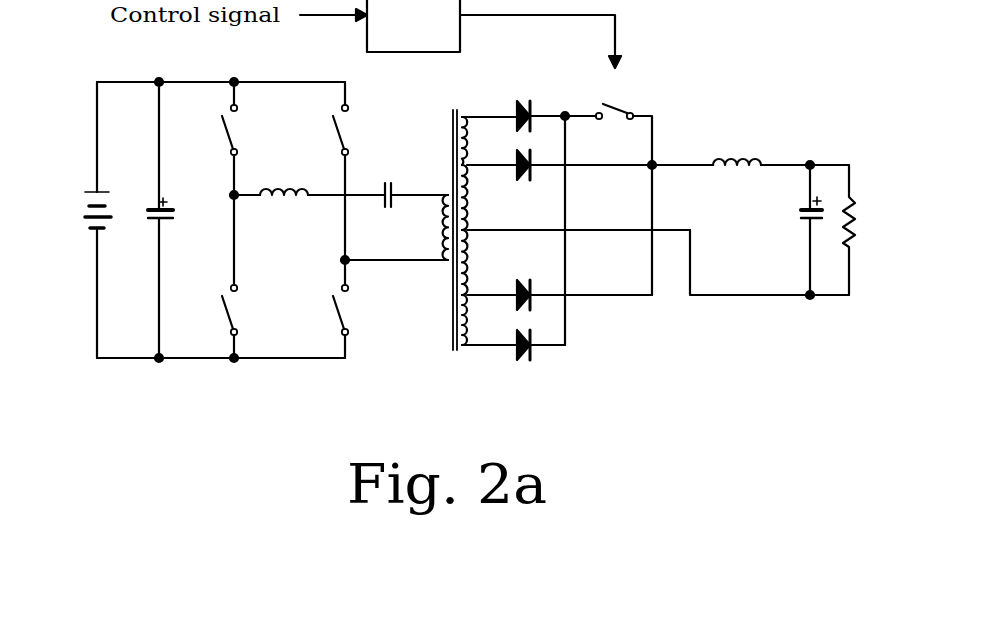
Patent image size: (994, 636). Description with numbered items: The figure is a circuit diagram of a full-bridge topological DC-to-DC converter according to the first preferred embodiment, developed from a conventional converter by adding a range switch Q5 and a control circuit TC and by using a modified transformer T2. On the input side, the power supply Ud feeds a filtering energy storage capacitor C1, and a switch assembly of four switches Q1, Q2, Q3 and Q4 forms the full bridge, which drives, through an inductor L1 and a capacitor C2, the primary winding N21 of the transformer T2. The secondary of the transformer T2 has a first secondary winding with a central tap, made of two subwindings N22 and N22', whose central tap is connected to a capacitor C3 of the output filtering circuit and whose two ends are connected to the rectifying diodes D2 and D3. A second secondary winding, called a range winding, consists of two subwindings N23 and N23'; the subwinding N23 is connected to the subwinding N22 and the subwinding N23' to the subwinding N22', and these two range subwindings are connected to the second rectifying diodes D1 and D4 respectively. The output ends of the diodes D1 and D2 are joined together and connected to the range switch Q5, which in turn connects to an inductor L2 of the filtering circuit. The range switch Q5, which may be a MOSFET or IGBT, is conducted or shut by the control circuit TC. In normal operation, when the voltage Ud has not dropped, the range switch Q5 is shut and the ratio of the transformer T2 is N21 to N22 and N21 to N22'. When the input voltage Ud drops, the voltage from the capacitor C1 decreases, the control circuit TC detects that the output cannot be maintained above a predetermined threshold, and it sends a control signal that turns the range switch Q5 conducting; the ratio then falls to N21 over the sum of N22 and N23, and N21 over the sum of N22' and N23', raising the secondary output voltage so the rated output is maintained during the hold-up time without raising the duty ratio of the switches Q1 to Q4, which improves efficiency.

The power supply input voltage Ud is at (111, 220).
The filtering energy storage capacitor C1 is at (173, 220).
The switch of switch assembly Q1 is at (217, 138).
The switch of switch assembly Q2 is at (217, 276).
The switch of switch assembly Q3 is at (328, 171).
The switch of switch assembly Q4 is at (328, 309).
The inductor L1 is at (289, 182).
The capacitor C2 is at (396, 183).
The transformer T2 is at (517, 221).
The primary winding N21 is at (396, 227).
The subwinding of first secondary winding N22 is at (576, 197).
The subwinding of first secondary winding N22' is at (489, 262).
The subwinding of range winding N23 is at (489, 141).
The subwinding of range winding N23' is at (489, 320).
The second rectifying diode D1 is at (555, 105).
The rectifying diode D2 is at (615, 179).
The rectifying diode D3 is at (584, 283).
The second rectifying diode D4 is at (540, 359).
The range switch Q5 is at (624, 187).
The inductor of filtering circuit L2 is at (781, 153).
The capacitor of filtering circuit C3 is at (798, 230).
The control circuit TC is at (460, 34).